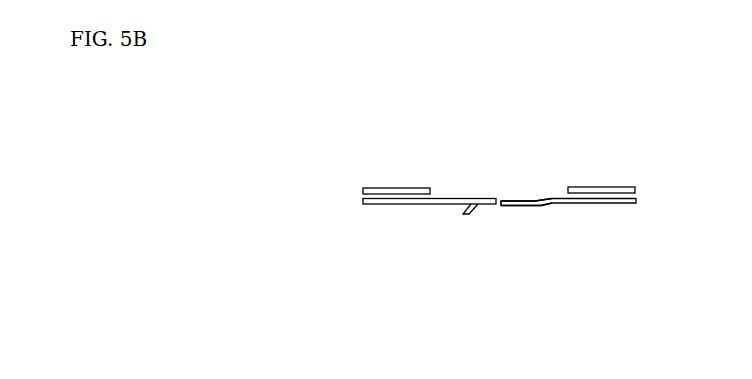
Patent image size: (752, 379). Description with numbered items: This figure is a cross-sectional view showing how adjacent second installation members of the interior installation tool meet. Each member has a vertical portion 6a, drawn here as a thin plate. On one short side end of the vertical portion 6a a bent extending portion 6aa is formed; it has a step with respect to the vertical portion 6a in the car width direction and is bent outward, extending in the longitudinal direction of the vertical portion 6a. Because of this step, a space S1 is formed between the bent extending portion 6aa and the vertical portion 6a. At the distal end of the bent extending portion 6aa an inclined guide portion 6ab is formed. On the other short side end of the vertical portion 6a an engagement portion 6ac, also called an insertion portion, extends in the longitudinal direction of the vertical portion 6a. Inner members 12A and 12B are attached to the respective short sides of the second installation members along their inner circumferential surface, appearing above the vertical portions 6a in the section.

The inner member 12B is at (398, 187).
The inner member 12A is at (602, 187).
The vertical portion 6a is at (385, 205).
The inclined guide portion 6ab is at (470, 215).
The bent extending portion 6aa is at (523, 206).
The engagement portion 6ac is at (518, 200).
The space S1 is at (541, 198).